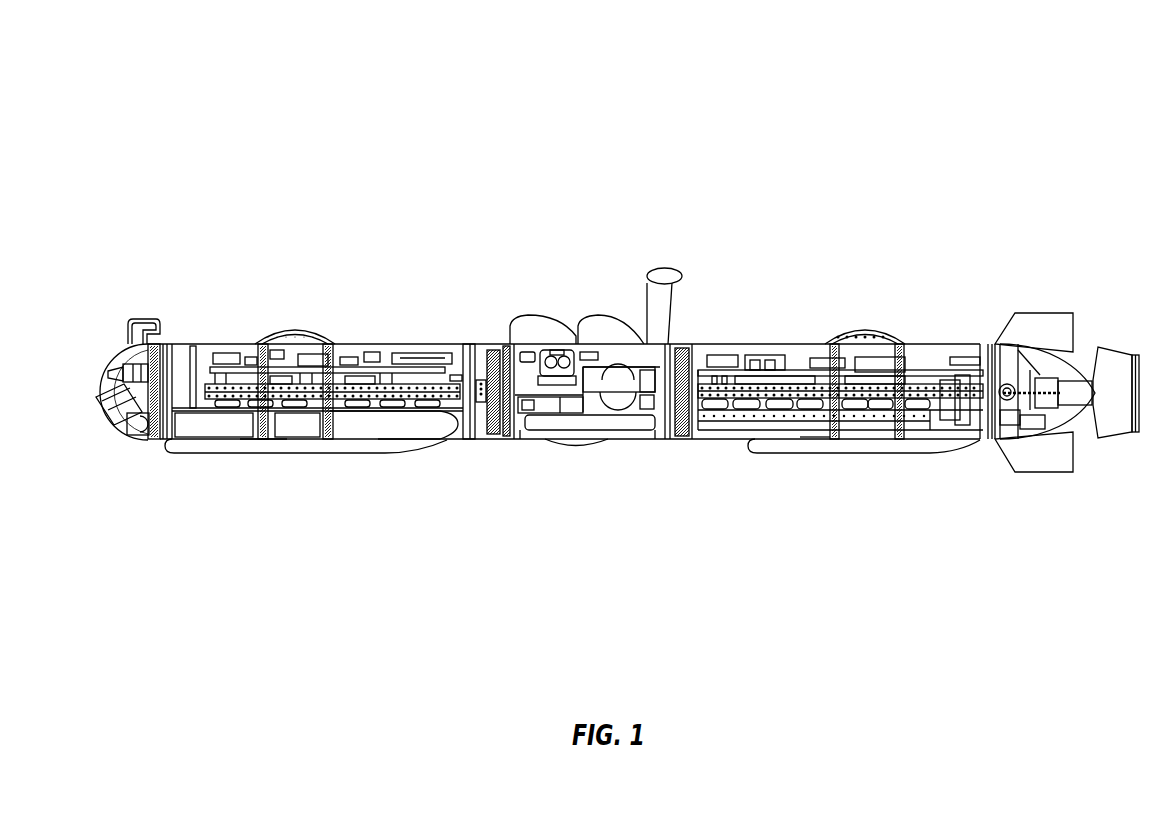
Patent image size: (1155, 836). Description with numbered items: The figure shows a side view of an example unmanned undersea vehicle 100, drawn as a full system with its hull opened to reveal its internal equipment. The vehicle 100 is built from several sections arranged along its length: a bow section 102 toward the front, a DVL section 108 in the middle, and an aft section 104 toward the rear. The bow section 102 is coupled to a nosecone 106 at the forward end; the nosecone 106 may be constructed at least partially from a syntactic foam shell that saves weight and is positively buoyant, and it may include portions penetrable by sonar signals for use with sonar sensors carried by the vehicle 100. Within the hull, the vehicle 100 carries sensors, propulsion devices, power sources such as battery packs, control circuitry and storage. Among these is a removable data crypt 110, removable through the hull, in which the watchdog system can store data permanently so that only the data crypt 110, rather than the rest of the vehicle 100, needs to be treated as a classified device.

The vehicle 100 is at (234, 188).
The bow section 102 is at (362, 342).
The aft section 104 is at (754, 344).
The nosecone 106 is at (112, 358).
The DVL section 108 is at (574, 446).
The data crypt 110 is at (545, 350).